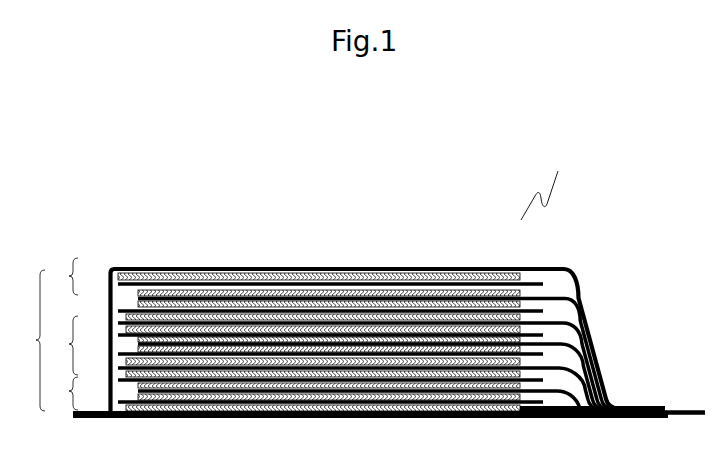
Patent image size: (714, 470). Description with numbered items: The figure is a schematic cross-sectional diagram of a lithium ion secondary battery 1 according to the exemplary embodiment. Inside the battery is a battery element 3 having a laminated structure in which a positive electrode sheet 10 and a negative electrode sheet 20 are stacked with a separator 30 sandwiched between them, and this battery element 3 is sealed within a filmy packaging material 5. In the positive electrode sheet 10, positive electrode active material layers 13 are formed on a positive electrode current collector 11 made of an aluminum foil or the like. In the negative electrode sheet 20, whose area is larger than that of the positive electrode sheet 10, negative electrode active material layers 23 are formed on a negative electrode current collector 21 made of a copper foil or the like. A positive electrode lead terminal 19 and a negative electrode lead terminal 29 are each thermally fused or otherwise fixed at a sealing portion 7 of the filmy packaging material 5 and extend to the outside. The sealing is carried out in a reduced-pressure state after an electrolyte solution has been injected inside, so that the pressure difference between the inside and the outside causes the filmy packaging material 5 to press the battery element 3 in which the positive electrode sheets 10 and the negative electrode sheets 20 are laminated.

The lithium ion secondary battery 1 is at (544, 186).
The battery element 3 is at (35, 340).
The filmy packaging material 5 is at (355, 410).
The sealing portion 7 is at (657, 408).
The positive electrode sheet 10 is at (62, 345).
The positive electrode current collector 11 is at (130, 336).
The positive electrode active material layer 13 is at (118, 354).
The positive electrode lead terminal 19 is at (595, 374).
The negative electrode sheet 20 is at (62, 334).
The negative electrode current collector 21 is at (101, 404).
The negative electrode active material layer 23 is at (128, 378).
The negative electrode lead terminal 29 is at (601, 386).
The separator 30 is at (130, 295).